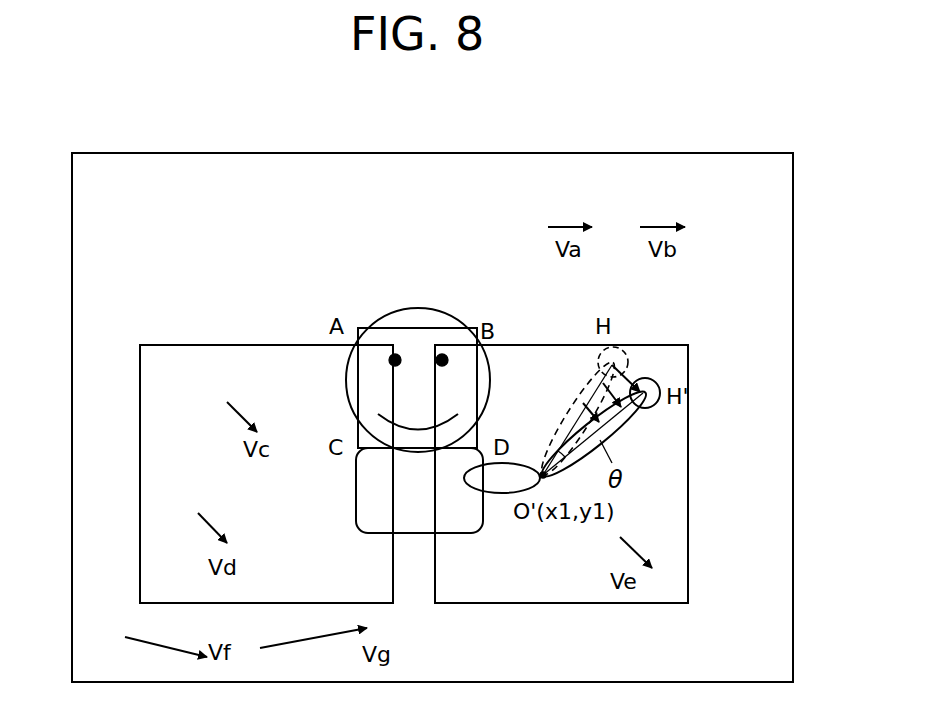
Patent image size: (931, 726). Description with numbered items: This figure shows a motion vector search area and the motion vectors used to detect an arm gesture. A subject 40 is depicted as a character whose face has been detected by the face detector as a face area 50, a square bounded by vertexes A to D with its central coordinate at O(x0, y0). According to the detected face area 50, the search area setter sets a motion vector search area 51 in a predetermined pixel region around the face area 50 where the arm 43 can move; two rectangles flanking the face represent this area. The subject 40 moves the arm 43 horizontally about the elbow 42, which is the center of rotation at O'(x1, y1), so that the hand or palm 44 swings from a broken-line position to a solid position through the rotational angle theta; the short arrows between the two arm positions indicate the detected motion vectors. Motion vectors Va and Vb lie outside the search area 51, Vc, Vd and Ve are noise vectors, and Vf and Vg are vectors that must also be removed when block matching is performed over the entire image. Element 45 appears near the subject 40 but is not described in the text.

The subject 40 is at (407, 523).
The elbow 42 is at (544, 472).
The arm 43 is at (598, 438).
The hand or palm 44 is at (648, 408).
The left hand 45 is at (468, 487).
The face area 50 is at (358, 345).
The motion vector search area 51 is at (160, 345).